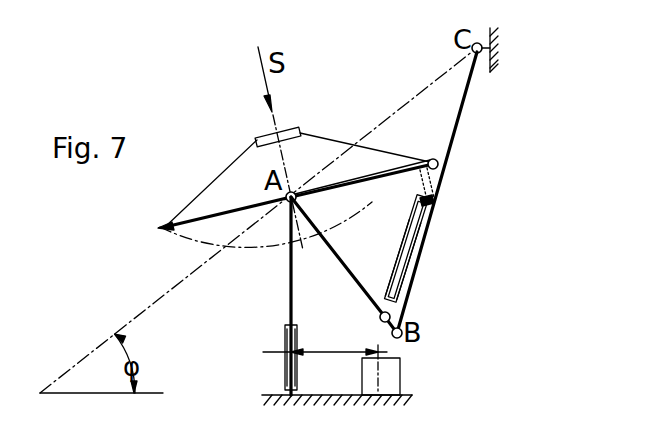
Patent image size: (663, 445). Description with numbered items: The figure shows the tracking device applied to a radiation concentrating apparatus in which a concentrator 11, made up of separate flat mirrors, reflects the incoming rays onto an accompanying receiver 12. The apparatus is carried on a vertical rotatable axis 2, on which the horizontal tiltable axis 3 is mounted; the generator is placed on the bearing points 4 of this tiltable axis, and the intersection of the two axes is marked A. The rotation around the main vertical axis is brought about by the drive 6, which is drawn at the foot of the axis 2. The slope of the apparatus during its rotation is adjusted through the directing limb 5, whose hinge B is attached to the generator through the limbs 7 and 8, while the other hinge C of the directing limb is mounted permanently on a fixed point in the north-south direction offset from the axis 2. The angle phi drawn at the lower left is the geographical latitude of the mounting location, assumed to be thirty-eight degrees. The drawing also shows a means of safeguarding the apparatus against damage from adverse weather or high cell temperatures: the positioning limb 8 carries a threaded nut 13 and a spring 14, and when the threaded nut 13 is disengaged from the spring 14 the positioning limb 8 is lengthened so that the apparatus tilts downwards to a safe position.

The vertical rotatable axis 2 is at (289, 295).
The horizontal tiltable axis 3 is at (435, 114).
The bearing points 4 is at (292, 194).
The directing limb 5 is at (427, 242).
The drive 6 is at (391, 375).
The limb 7 is at (370, 298).
The positioning limb 8 is at (400, 280).
The concentrator 11 is at (372, 203).
The receiver 12 is at (293, 128).
The threaded nut 13 is at (430, 200).
The spring 14 is at (437, 176).